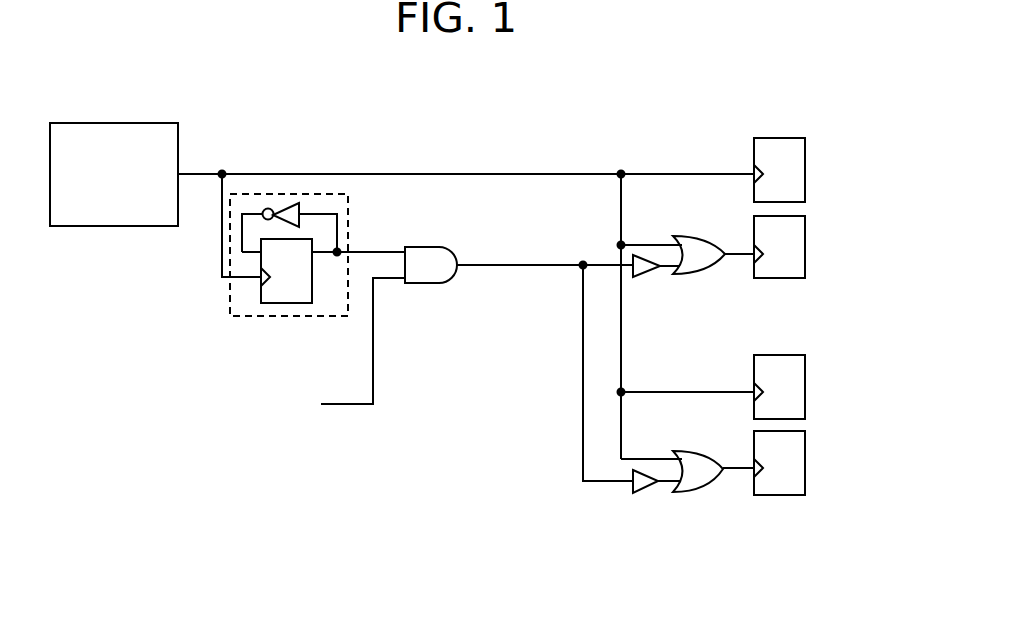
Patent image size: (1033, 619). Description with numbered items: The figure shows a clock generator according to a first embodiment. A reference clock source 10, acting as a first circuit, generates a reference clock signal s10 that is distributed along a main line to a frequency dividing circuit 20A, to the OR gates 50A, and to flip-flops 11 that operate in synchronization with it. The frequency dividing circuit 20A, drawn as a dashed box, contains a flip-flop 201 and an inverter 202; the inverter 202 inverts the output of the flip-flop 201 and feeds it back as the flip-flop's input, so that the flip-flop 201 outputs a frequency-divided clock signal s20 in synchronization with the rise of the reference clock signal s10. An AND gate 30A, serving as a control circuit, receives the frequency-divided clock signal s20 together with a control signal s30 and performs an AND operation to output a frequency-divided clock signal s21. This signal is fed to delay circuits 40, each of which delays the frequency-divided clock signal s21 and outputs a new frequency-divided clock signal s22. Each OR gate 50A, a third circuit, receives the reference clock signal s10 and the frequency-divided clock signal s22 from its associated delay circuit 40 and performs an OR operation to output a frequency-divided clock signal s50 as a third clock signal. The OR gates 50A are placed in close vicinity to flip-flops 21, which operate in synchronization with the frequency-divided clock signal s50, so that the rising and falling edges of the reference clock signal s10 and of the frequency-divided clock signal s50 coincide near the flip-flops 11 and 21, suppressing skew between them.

The reference clock source 10 is at (178, 152).
The flip-flop 11 is at (805, 170).
The frequency dividing circuit 20A is at (230, 293).
The flip-flop 201 is at (288, 303).
The inverter 202 is at (301, 203).
The flip-flop 21 is at (805, 248).
The AND gate 30A is at (428, 283).
The delay circuit 40 is at (643, 277).
The OR gate 50A is at (688, 236).
The reference clock signal s10 is at (507, 174).
The frequency-divided clock signal s20 is at (377, 252).
The frequency-divided clock signal s21 is at (507, 265).
The frequency-divided clock signal s22 is at (665, 267).
The control signal s30 is at (343, 405).
The frequency-divided clock signal s50 is at (733, 254).